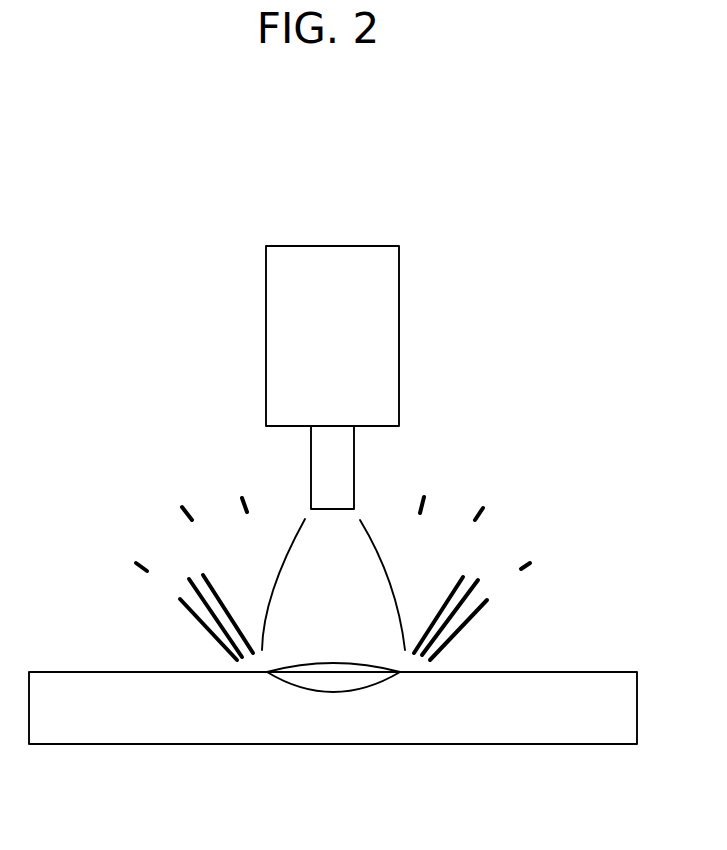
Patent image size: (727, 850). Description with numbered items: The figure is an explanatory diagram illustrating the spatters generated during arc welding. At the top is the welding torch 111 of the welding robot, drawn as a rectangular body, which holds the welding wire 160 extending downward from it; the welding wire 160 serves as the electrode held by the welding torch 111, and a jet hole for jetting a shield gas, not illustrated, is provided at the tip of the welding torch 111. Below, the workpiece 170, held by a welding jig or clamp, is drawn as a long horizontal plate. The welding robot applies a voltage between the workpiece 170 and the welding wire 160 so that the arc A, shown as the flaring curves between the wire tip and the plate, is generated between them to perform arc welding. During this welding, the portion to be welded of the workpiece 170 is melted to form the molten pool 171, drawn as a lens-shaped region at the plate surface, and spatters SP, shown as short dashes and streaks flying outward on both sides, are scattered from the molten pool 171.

The welding torch 111 is at (402, 328).
The welding wire 160 is at (343, 470).
The arc A is at (390, 570).
The spatters SP is at (191, 590).
The workpiece 170 is at (458, 723).
The molten pool 171 is at (332, 682).